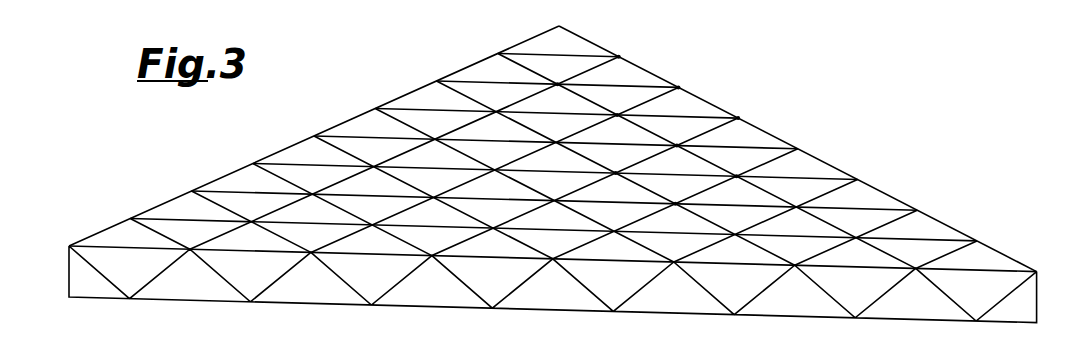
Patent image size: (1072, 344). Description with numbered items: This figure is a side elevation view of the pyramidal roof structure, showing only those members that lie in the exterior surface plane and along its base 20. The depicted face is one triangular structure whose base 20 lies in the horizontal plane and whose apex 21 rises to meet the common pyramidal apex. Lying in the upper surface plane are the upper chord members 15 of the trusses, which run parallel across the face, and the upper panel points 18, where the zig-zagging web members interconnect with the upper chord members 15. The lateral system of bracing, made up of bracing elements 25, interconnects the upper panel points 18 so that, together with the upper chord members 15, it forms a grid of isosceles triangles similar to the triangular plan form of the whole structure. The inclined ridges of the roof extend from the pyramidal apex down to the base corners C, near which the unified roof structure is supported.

The upper chord members 15 is at (543, 117).
The upper panel points 18 is at (619, 56).
The base 20 is at (683, 295).
The apex 21 is at (563, 38).
The bracing elements 25 is at (650, 68).
The base corners C is at (68, 263).